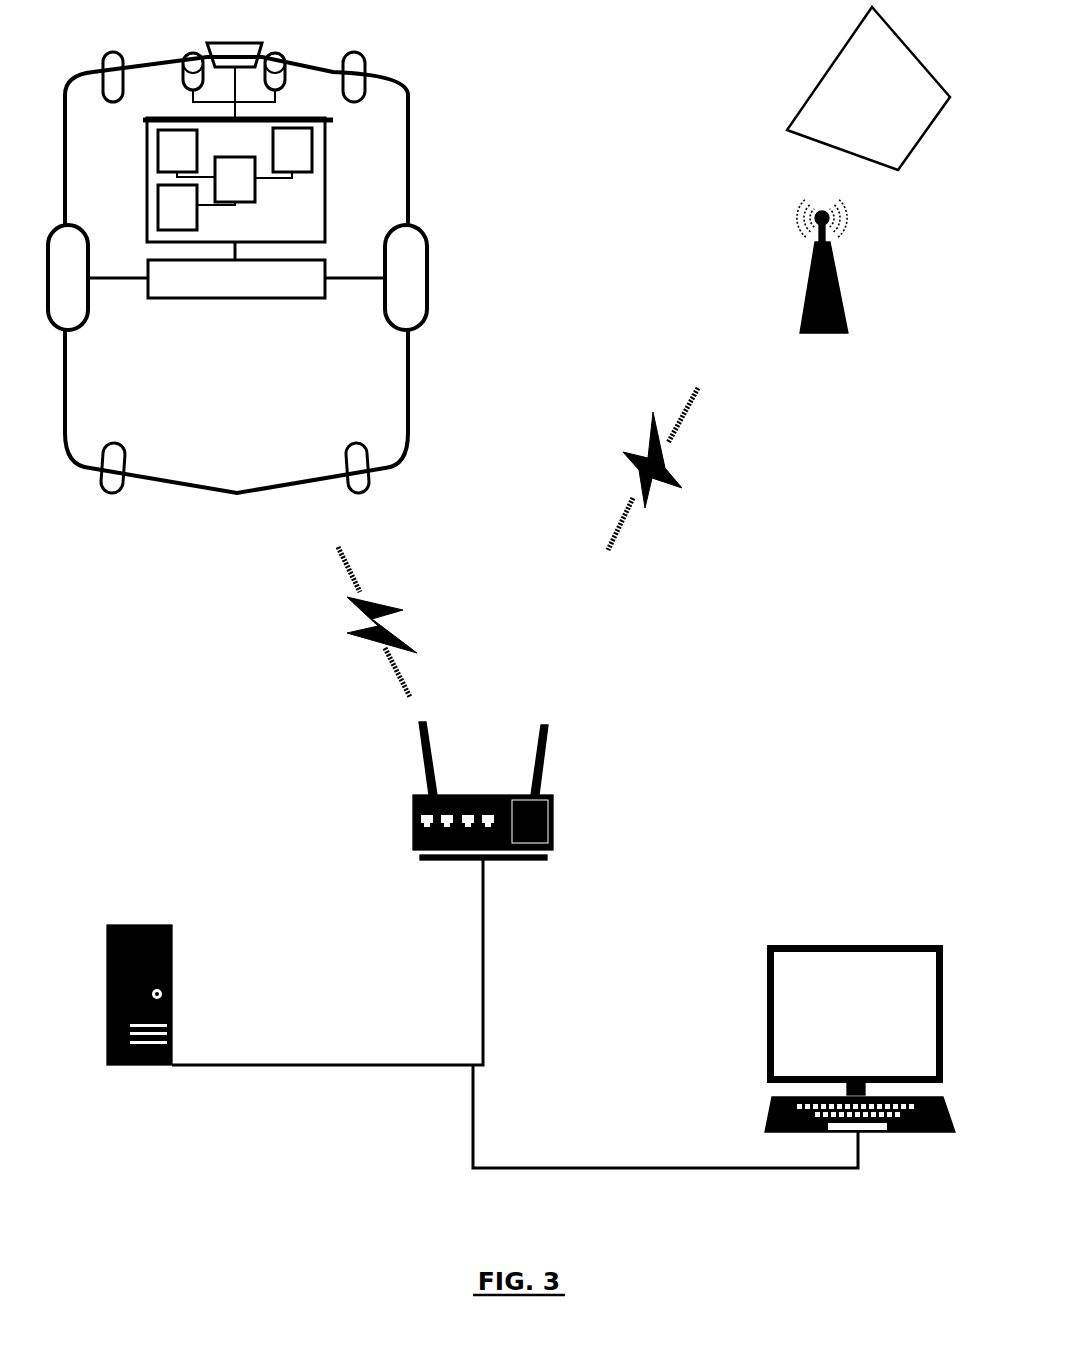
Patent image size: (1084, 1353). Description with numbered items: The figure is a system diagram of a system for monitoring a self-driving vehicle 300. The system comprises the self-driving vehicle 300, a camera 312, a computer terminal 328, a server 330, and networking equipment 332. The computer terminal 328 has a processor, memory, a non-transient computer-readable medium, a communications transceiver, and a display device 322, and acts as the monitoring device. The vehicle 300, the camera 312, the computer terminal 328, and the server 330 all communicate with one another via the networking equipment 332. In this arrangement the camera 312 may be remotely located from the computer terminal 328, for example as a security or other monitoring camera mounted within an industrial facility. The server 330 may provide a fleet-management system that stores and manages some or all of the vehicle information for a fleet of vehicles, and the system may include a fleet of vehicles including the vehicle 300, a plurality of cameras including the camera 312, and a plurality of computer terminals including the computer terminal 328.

The self-driving vehicle 300 is at (207, 382).
The camera 312 is at (820, 335).
The display device 322 is at (835, 1029).
The computer terminal 328 is at (808, 1041).
The server 330 is at (172, 997).
The networking equipment 332 is at (553, 832).